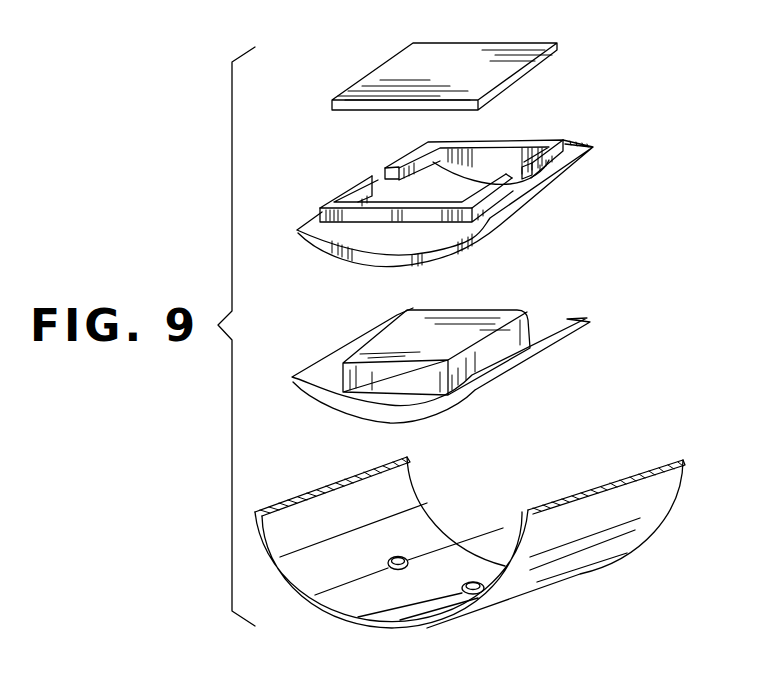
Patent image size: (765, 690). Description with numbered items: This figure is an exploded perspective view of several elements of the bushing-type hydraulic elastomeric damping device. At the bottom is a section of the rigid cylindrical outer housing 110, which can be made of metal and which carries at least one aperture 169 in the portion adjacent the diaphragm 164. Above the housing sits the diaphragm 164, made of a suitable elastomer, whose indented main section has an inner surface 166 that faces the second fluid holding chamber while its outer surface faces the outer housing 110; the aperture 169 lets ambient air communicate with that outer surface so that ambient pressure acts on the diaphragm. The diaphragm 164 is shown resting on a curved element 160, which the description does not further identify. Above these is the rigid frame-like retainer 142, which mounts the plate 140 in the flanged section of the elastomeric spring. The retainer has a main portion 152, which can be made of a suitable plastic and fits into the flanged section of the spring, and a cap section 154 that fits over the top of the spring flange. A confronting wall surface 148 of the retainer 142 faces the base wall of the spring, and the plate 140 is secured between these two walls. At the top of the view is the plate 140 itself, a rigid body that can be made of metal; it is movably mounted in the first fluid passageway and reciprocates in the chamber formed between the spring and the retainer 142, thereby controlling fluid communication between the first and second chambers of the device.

The outer housing 110 is at (466, 542).
The plate 140 is at (513, 53).
The retainer 142 is at (448, 176).
The confronting wall surface 148 is at (562, 134).
The main portion 152 is at (494, 202).
The cap section 154 is at (312, 222).
The curved mounting pad 160 is at (328, 364).
The diaphragm 164 is at (446, 345).
The inner surface 166 is at (474, 318).
The aperture 169 is at (401, 557).